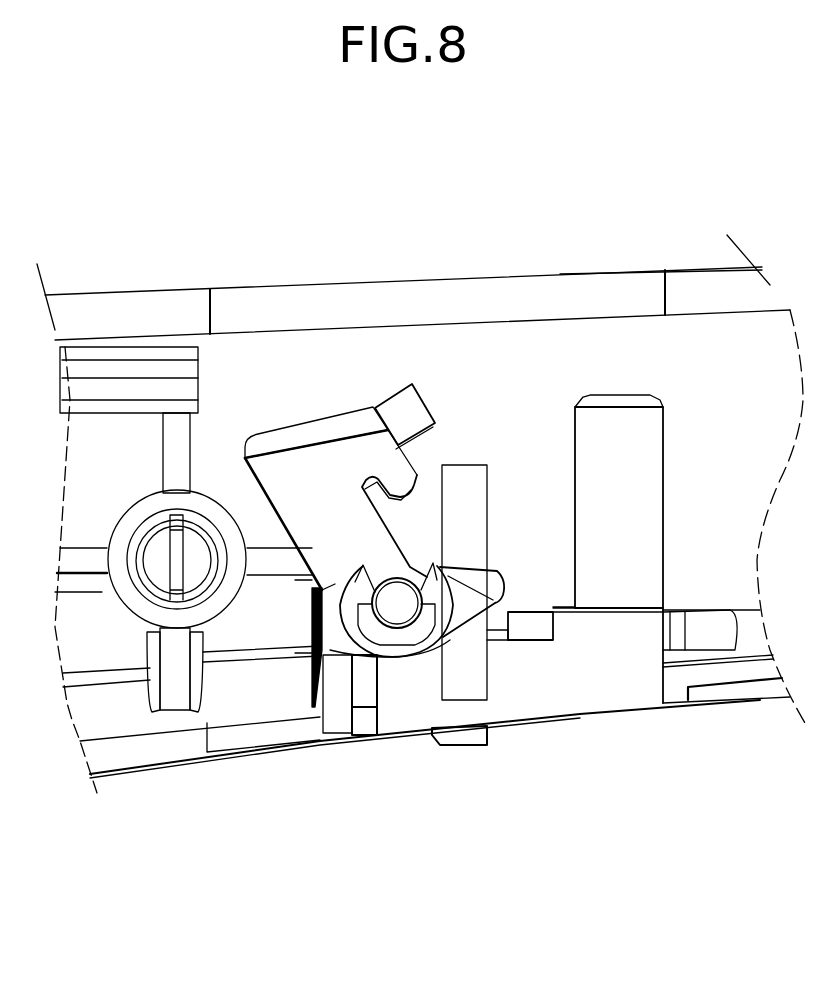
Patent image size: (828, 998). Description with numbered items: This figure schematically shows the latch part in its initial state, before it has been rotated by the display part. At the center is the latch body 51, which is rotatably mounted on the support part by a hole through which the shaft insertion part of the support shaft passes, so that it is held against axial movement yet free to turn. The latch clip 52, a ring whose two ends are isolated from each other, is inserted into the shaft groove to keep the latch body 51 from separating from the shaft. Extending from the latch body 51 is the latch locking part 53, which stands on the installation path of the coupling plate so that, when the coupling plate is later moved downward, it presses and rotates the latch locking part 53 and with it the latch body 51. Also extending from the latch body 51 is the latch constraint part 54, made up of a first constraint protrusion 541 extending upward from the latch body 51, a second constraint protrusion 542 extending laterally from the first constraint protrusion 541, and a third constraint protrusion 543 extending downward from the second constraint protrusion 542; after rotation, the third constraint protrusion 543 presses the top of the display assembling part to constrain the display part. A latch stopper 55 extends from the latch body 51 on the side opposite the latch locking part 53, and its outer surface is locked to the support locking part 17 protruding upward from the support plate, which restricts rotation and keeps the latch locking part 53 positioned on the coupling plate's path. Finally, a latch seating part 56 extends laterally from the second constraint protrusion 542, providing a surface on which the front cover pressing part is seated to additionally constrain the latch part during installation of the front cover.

The support locking part 17 is at (403, 655).
The latch body 51 is at (320, 587).
The latch clip 52 is at (410, 657).
The latch locking part 53 is at (503, 583).
The latch constraint part 54 is at (350, 912).
The first constraint protrusion 541 is at (310, 520).
The second constraint protrusion 542 is at (340, 412).
The third constraint protrusion 543 is at (302, 612).
The latch stopper 55 is at (322, 650).
The latch seating part 56 is at (410, 403).